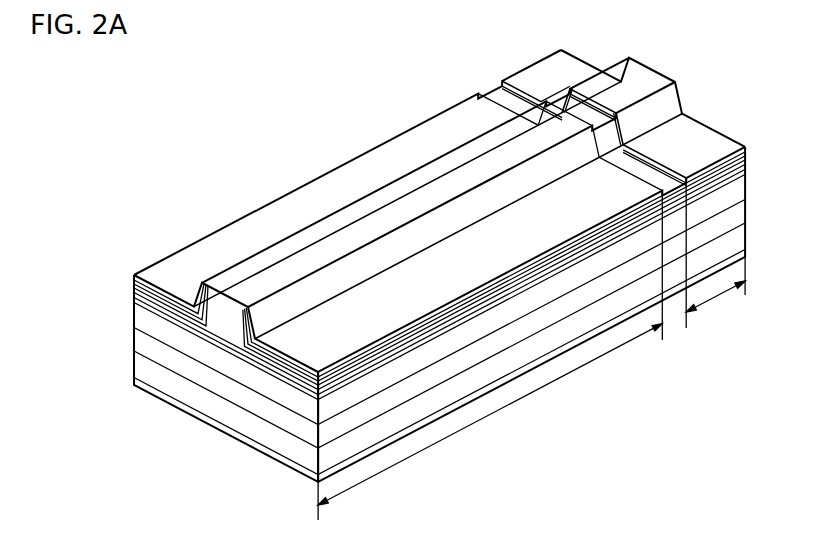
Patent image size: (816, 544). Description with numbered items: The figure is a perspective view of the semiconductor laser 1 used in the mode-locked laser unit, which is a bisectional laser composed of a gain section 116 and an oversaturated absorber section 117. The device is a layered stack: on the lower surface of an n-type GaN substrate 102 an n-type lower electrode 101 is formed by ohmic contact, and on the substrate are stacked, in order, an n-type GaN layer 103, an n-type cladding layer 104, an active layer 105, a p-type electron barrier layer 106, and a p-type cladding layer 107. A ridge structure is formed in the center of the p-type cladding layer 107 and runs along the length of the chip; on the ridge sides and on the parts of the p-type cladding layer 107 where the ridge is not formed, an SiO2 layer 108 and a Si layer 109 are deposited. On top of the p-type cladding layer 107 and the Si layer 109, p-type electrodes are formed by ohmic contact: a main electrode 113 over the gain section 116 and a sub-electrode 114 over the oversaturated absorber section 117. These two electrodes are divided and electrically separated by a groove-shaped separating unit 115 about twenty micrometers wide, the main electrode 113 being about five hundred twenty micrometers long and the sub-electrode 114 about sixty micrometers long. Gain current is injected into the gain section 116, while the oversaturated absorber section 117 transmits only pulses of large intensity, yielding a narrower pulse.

The semiconductor laser 1 is at (272, 83).
The n-type lower electrode 101 is at (134, 382).
The n-type GaN substrate 102 is at (134, 367).
The n-type GaN layer 103 is at (134, 340).
The n-type cladding layer 104 is at (134, 317).
The active layer 105 is at (134, 305).
The p-type electron barrier layer 106 is at (134, 296).
The p-type cladding layer 107 is at (134, 289).
The SiO2 layer 108 is at (134, 281).
The Si layer 109 is at (134, 274).
The main electrode 113 is at (262, 214).
The sub-electrode 114 is at (568, 67).
The separating unit 115 is at (498, 92).
The gain section 116 is at (490, 355).
The oversaturated absorber section 117 is at (715, 254).